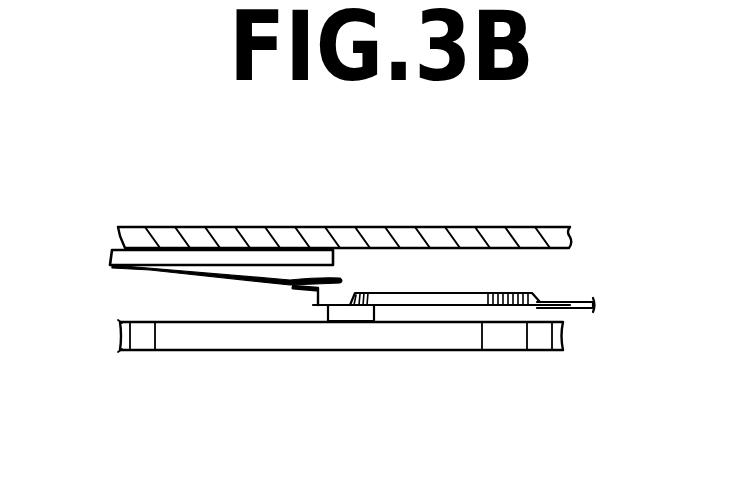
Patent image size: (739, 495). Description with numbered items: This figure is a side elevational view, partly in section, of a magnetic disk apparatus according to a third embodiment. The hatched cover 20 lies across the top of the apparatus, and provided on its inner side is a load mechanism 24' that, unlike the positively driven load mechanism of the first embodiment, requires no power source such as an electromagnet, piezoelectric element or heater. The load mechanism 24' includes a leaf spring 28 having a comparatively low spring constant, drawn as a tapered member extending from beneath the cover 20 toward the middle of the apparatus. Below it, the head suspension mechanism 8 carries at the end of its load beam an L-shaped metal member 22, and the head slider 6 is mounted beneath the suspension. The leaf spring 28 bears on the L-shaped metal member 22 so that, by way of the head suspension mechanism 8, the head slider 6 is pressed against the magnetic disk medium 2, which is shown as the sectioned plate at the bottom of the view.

The magnetic disk medium 2 is at (497, 340).
The head slider 6 is at (355, 313).
The head suspension mechanism 8 is at (550, 301).
The cover 20 is at (418, 227).
The L-shaped metal member 22 is at (309, 294).
The load mechanism 24' is at (142, 361).
The leaf spring 28 is at (252, 277).